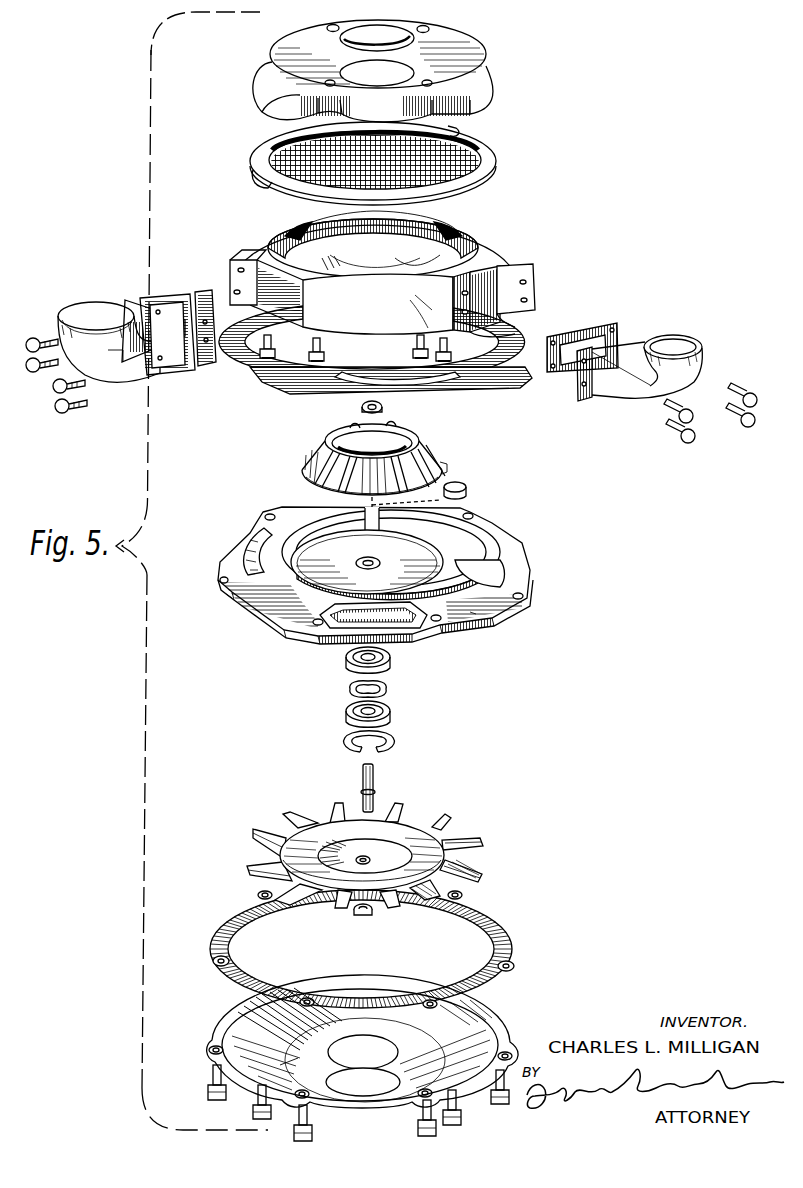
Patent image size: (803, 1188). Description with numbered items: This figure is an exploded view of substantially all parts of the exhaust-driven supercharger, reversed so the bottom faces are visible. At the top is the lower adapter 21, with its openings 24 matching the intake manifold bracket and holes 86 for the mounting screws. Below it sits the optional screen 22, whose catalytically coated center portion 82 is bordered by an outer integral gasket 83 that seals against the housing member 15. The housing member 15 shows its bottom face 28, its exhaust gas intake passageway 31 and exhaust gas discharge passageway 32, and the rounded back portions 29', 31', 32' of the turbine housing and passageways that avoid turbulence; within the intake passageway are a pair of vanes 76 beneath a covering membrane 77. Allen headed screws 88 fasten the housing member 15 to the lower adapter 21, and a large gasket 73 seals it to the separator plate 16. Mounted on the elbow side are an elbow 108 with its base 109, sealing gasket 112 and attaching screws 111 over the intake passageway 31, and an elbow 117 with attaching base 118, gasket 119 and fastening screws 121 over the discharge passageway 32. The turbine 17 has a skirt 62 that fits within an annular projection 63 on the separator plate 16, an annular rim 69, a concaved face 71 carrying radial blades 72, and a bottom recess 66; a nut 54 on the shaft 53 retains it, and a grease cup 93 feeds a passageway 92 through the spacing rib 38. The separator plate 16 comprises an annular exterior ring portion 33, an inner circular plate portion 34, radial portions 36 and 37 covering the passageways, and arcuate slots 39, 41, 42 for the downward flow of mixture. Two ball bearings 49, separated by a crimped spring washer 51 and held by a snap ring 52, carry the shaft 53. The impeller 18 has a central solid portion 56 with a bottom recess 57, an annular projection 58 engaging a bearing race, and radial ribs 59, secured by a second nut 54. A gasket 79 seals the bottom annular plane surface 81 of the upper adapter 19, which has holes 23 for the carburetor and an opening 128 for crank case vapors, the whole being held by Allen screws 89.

The supercharger housing member 15 is at (379, 300).
The separator plate 16 is at (389, 568).
The turbine 17 is at (387, 446).
The impeller 18 is at (378, 852).
The upper adapter 19 is at (379, 1045).
The lower adapter 21 is at (395, 61).
The screen 22 is at (398, 155).
The holes 23 is at (363, 1052).
The openings 24 is at (385, 26).
The bottom face 28 is at (482, 222).
The back portion of turbine housing 29' is at (375, 249).
The exhaust gas intake passageway 31 is at (528, 289).
The back portion of turbine intake passageway 31' is at (425, 254).
The exhaust gas discharge passageway 32 is at (250, 281).
The back portion of turbine discharge passageway 32' is at (316, 257).
The annular exterior ring portion 33 is at (500, 542).
The inner circular plate portion 34 is at (445, 575).
The solid radial portion 36 is at (262, 600).
The radial portion 37 is at (470, 616).
The spacing rib 38 is at (363, 525).
The arcuate slot 39 is at (250, 532).
The arcuate slot 41 is at (490, 580).
The arcuate slot 42 is at (400, 622).
The ball bearings 49 is at (346, 667).
The crimped spring washer 51 is at (388, 689).
The snap ring 52 is at (394, 749).
The shaft 53 is at (374, 778).
The nuts 54 is at (383, 410).
The central solid portion 56 is at (400, 828).
The bottom recess 57 is at (348, 850).
The annular projection 58 is at (368, 856).
The radial ribs 59 is at (490, 880).
The skirt 62 is at (454, 458).
The annular projection 63 is at (300, 573).
The recess 66 is at (392, 452).
The annular rim 69 is at (352, 424).
The face 71 is at (380, 469).
The blades 72 is at (318, 442).
The gasket 73 is at (520, 386).
The vanes 76 is at (510, 336).
The covering membrane 77 is at (515, 327).
The gasket 79 is at (510, 932).
The bottom annular plane surface 81 is at (478, 1005).
The center portion of screen 82 is at (465, 140).
The outer integral gasket 83 is at (490, 150).
The holes 86 is at (335, 24).
The Allen headed screws 88 is at (310, 355).
The Allen screws 89 is at (216, 1100).
The passageway 92 is at (406, 524).
The grease cup 93 is at (466, 492).
The elbow 108 is at (700, 370).
The base 109 is at (584, 401).
The attaching screws 111 is at (716, 438).
The sealing gasket 112 is at (605, 325).
The elbow 117 is at (125, 392).
The attaching base 118 is at (190, 375).
The left flange 119 is at (187, 274).
The fastening screws 121 is at (50, 395).
The opening 128 is at (290, 1062).